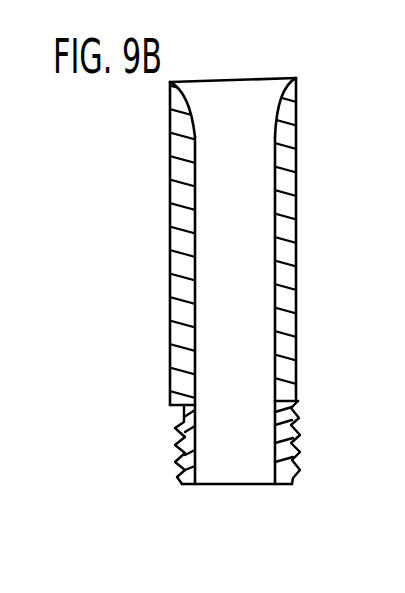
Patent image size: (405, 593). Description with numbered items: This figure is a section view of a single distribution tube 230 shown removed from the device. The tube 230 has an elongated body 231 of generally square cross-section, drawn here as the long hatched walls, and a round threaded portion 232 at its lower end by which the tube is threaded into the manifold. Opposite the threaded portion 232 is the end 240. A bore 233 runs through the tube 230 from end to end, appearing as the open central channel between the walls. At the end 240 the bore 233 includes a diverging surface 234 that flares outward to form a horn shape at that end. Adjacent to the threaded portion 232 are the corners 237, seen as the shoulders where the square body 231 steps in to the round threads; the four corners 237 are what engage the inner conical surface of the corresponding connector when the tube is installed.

The distribution tube 230 is at (377, 143).
The body 231 is at (298, 268).
The threaded portion 232 is at (300, 452).
The bore 233 is at (248, 440).
The diverging surface 234 is at (190, 88).
The corners 237 is at (170, 405).
The end 240 is at (274, 80).